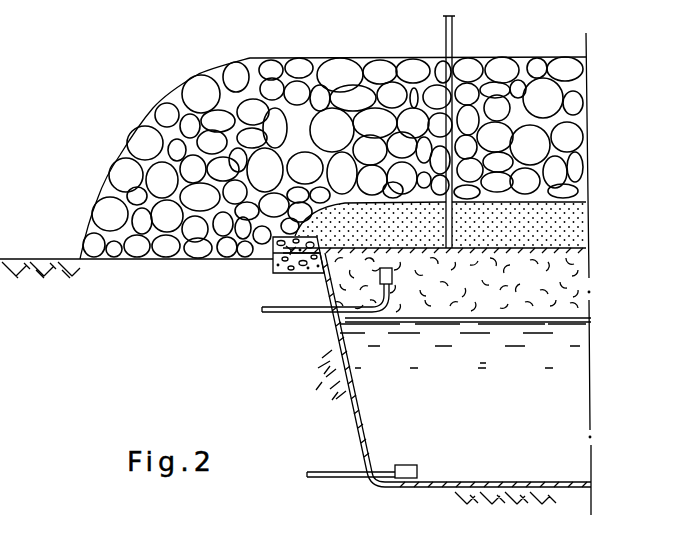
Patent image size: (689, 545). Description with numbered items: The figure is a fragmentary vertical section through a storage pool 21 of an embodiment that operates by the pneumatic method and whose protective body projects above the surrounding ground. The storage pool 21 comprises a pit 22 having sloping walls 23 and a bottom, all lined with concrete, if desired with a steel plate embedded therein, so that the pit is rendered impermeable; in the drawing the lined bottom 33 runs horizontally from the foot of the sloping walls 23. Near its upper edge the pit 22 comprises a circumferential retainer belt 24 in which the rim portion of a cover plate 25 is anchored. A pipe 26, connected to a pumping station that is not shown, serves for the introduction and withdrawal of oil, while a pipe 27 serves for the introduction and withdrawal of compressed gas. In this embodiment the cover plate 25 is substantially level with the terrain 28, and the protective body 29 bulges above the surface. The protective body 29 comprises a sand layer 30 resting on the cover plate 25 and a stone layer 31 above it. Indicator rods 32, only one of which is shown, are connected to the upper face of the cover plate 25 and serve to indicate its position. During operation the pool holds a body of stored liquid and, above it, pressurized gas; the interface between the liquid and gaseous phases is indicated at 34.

The storage pool 21 is at (598, 314).
The pit 22 is at (585, 386).
The sloping walls 23 is at (350, 406).
The retainer belt 24 is at (275, 271).
The cover plate 25 is at (354, 246).
The pipe 26 is at (353, 481).
The pipe 27 is at (305, 314).
The terrain 28 is at (48, 258).
The protective body 29 is at (153, 102).
The sand layer 30 is at (572, 225).
The stone layer 31 is at (574, 72).
The indicator rod 32 is at (454, 37).
The bottom liner 33 is at (496, 483).
The interface 34 is at (475, 323).